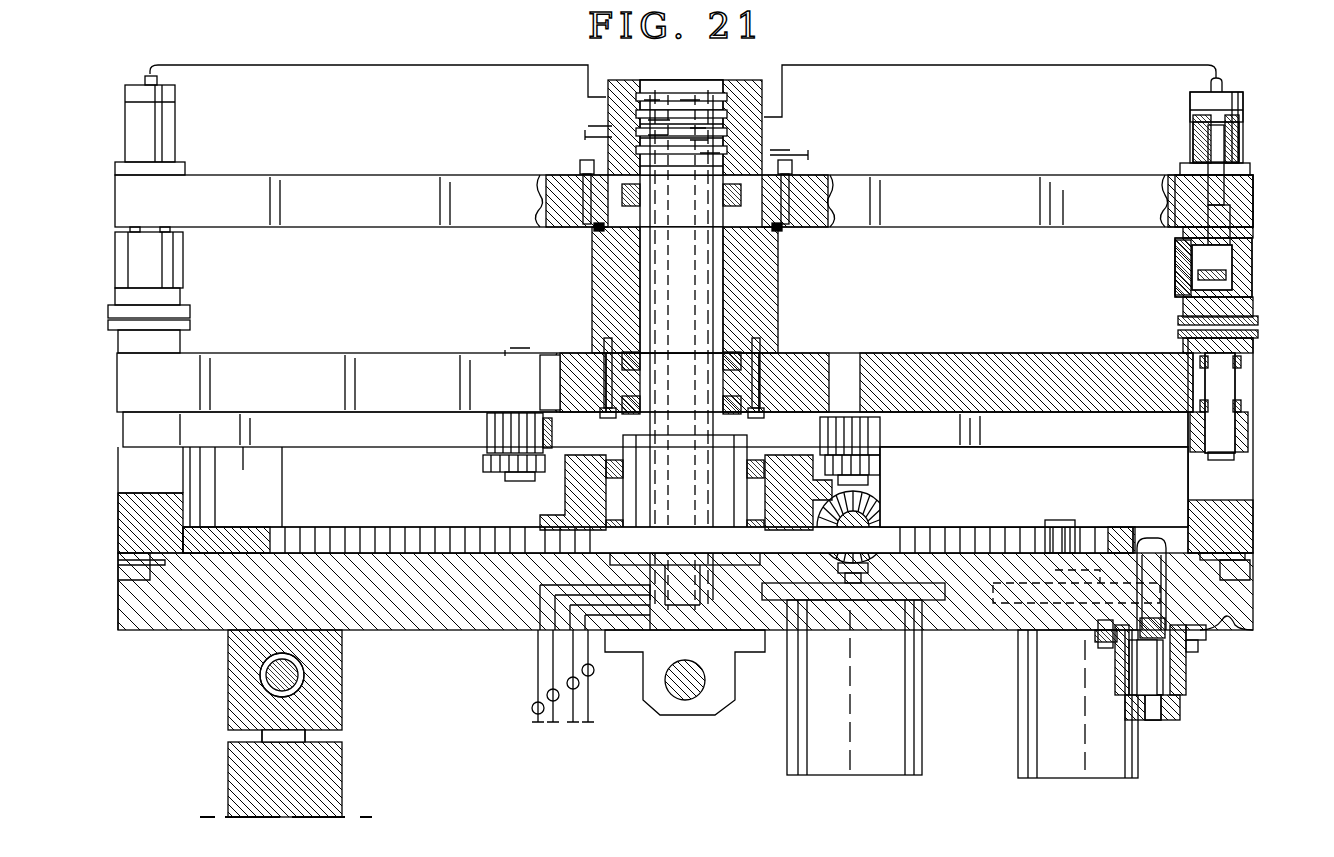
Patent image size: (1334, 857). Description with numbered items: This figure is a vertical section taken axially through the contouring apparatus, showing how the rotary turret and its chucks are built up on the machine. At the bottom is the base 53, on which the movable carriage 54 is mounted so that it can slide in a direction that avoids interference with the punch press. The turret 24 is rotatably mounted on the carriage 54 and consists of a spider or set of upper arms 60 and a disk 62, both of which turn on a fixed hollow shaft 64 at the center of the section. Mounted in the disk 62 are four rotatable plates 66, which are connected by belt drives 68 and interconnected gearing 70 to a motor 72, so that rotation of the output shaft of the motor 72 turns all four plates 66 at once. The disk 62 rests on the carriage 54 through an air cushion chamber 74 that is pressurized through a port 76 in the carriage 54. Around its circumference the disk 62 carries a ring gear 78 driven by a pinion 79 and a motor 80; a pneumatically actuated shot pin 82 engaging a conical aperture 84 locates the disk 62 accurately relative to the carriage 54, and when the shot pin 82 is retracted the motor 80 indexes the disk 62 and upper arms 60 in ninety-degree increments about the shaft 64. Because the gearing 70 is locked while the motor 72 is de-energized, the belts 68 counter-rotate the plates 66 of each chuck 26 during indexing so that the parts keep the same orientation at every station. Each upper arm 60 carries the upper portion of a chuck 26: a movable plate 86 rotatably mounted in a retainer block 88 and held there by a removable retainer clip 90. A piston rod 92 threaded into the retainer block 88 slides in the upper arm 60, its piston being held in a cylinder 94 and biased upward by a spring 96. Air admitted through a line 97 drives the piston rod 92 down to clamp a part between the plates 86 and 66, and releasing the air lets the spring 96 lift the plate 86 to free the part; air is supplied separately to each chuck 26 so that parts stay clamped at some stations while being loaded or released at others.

The turret 24 is at (955, 175).
The chuck 26 is at (178, 128).
The base 53 is at (344, 760).
The movable carriage 54 is at (1252, 618).
The upper arms 60 is at (1010, 228).
The disk 62 is at (1034, 355).
The fixed hollow shaft 64 is at (620, 439).
The rotatable plates 66 is at (1253, 350).
The belt drives 68 is at (988, 440).
The interconnected gearing 70 is at (888, 512).
The motor 72 is at (922, 700).
The air cushion chamber 74 is at (122, 566).
The port 76 is at (152, 625).
The circumferential ring gear 78 is at (1124, 528).
The pinion 79 is at (1052, 529).
The motor 80 is at (1140, 764).
The shot pin 82 is at (1228, 630).
The conical aperture 84 is at (1152, 545).
The movable plate 86 is at (1258, 318).
The retainer block 88 is at (1176, 278).
The removable retainer clip 90 is at (1250, 270).
The piston rod 92 is at (1252, 186).
The cylinder 94 is at (1245, 104).
The spring 96 is at (1242, 150).
The line 97 is at (1226, 86).